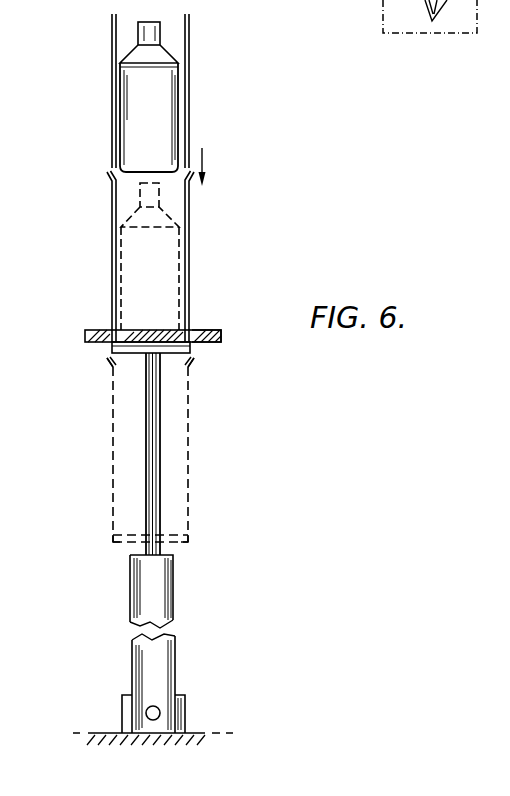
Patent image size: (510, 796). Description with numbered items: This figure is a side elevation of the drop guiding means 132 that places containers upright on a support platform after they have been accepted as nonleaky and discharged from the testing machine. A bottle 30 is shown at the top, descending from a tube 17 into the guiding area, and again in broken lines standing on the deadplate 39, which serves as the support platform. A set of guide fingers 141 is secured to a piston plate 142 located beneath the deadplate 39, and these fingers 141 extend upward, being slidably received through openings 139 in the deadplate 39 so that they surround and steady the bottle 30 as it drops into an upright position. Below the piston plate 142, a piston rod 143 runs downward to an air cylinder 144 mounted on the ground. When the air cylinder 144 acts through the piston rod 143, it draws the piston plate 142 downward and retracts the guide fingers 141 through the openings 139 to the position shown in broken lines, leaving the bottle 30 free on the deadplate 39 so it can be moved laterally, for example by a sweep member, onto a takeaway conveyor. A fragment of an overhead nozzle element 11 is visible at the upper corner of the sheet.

The nozzle fragment 11 is at (450, 12).
The upper tube 17 is at (190, 118).
The bottle 30 is at (177, 82).
The deadplate 39 is at (214, 328).
The drop guiding means 132 is at (182, 388).
The openings 139 is at (113, 330).
The guide fingers 141 is at (111, 200).
The piston plate 142 is at (112, 349).
The piston rod 143 is at (160, 488).
The air cylinder 144 is at (167, 668).